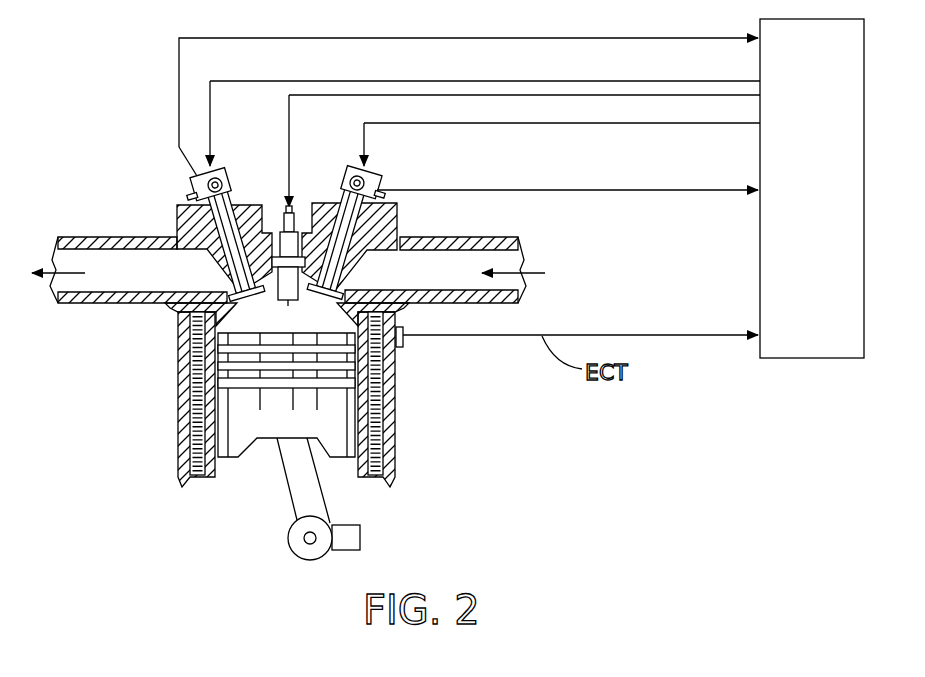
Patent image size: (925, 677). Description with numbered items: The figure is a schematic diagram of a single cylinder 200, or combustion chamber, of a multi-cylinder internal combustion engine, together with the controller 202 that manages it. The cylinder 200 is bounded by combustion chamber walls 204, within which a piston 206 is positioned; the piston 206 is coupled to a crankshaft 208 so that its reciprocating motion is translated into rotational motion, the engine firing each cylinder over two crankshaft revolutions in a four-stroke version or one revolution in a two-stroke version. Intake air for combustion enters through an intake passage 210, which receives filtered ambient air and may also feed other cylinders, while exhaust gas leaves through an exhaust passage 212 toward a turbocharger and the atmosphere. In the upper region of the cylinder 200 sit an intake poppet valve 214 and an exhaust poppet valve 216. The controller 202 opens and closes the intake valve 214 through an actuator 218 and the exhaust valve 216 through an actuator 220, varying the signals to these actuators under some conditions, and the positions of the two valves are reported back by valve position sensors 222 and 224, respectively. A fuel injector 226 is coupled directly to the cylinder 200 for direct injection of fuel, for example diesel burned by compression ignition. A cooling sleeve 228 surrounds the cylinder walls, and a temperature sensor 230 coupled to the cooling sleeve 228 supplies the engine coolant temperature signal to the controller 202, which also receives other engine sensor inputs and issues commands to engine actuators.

The cylinder 200 is at (306, 332).
The controller 202 is at (833, 201).
The combustion chamber walls 204 is at (218, 466).
The piston 206 is at (267, 423).
The crankshaft 208 is at (332, 522).
The intake passage 210 is at (445, 285).
The exhaust passage 212 is at (180, 285).
The intake poppet valve 214 is at (337, 288).
The exhaust poppet valve 216 is at (240, 290).
The actuator 218 is at (351, 170).
The actuator 220 is at (222, 170).
The valve position sensor 222 is at (374, 186).
The valve position sensor 224 is at (196, 189).
The fuel injector 226 is at (297, 230).
The cooling sleeve 228 is at (375, 425).
The temperature sensor 230 is at (405, 347).